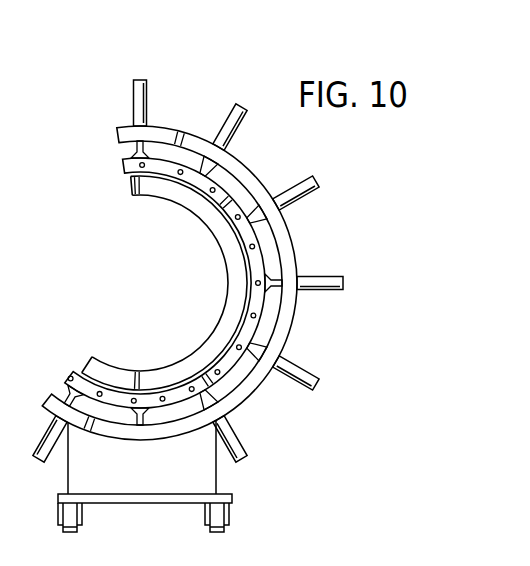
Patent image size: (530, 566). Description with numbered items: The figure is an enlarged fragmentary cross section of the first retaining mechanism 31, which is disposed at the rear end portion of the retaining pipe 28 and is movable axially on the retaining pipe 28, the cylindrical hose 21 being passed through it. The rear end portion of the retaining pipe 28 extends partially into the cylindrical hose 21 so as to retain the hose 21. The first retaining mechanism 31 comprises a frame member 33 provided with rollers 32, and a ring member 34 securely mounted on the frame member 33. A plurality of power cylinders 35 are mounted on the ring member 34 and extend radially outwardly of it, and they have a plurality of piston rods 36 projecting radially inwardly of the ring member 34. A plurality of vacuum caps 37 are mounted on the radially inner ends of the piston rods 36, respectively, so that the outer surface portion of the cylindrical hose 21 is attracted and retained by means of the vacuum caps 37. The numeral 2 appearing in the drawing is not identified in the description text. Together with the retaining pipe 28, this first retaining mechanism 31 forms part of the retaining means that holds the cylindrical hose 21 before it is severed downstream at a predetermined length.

The ring assembly 2 is at (215, 363).
The cylindrical hose 21 is at (234, 234).
The retaining pipe 28 is at (172, 198).
The first retaining mechanism 31 is at (266, 136).
The rollers 32 is at (72, 535).
The frame member 33 is at (217, 483).
The ring member 34 is at (257, 178).
The power cylinders 35 is at (150, 93).
The piston rods 36 is at (137, 147).
The vacuum caps 37 is at (258, 226).